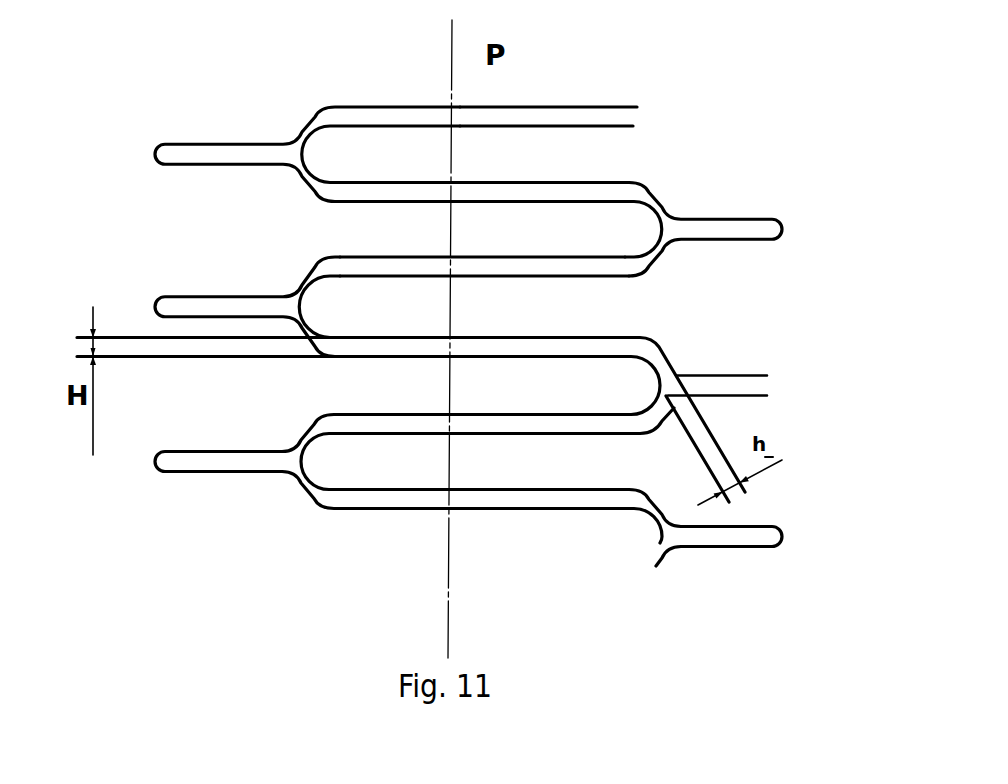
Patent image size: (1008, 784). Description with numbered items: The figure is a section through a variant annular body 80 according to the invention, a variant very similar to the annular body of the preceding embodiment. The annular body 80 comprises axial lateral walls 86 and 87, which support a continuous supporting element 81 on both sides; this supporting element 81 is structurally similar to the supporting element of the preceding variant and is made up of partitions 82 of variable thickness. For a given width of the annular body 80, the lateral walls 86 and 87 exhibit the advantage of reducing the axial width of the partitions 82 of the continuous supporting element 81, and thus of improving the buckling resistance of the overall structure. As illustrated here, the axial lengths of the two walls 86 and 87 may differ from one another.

The annular body 80 is at (429, 336).
The supporting element 81 is at (578, 153).
The partitions 82 is at (549, 283).
The axial lateral wall 86 is at (737, 222).
The axial lateral wall 87 is at (245, 458).